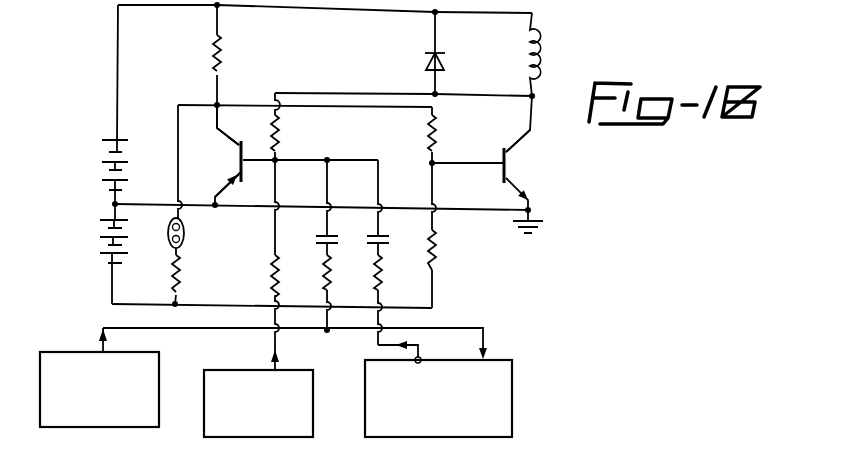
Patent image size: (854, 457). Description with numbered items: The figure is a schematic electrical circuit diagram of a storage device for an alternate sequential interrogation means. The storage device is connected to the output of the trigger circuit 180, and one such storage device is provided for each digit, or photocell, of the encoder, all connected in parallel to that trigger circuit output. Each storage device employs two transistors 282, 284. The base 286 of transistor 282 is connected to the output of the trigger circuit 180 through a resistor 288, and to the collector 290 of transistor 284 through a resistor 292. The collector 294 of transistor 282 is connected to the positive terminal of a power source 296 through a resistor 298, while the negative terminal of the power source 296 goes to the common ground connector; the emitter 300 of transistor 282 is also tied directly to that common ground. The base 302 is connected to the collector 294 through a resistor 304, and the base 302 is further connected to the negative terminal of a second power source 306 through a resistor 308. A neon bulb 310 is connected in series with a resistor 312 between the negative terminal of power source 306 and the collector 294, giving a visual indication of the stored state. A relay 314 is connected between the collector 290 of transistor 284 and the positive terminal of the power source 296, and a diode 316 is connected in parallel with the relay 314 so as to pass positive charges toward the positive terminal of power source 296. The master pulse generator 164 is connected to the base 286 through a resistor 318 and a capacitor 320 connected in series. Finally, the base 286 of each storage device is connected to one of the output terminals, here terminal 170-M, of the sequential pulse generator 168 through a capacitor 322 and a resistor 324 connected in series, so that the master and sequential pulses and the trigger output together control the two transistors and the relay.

The master pulse generator 164 is at (144, 353).
The sequential pulse generator 168 is at (512, 378).
The terminal of sequential pulse generator 170-M is at (420, 357).
The trigger circuit 180 is at (294, 371).
The transistor 282 is at (231, 165).
The transistor 284 is at (517, 165).
The base 286 is at (262, 125).
The resistor 288 is at (271, 281).
The collector 290 is at (516, 153).
The resistor 292 is at (281, 140).
The collector 294 is at (236, 144).
The power source 296 is at (102, 157).
The resistor 298 is at (222, 56).
The emitter 300 is at (233, 180).
The base 302 is at (500, 169).
The resistor 304 is at (431, 138).
The power source 306 is at (98, 234).
The resistor 308 is at (440, 256).
The neon bulb 310 is at (185, 234).
The resistor 312 is at (180, 282).
The relay 314 is at (540, 56).
The diode 316 is at (446, 60).
The resistor 318 is at (330, 281).
The capacitor 320 is at (335, 235).
The capacitor 322 is at (388, 235).
The resistor 324 is at (381, 281).